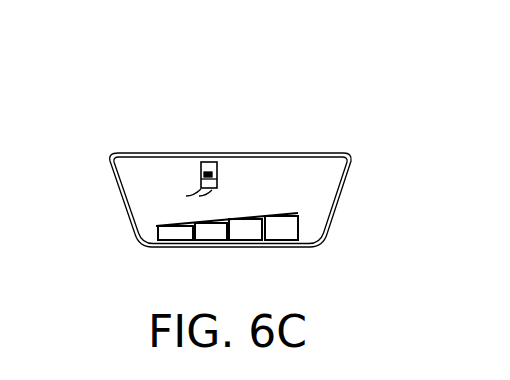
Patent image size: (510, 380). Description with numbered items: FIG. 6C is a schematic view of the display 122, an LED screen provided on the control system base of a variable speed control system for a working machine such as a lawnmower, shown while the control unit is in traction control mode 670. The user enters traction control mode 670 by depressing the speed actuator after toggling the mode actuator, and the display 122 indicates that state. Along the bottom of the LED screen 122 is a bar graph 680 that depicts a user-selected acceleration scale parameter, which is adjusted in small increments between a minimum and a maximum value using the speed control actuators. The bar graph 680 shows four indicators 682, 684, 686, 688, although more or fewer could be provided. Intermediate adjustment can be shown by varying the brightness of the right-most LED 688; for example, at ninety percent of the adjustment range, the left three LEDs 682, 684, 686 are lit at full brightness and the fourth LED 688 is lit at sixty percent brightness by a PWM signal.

The display 122 is at (313, 137).
The traction control mode 670 is at (202, 173).
The bar graph 680 is at (217, 238).
The indicator 682 is at (160, 233).
The indicator 684 is at (206, 236).
The indicator 686 is at (251, 236).
The right-most LED 688 is at (288, 231).